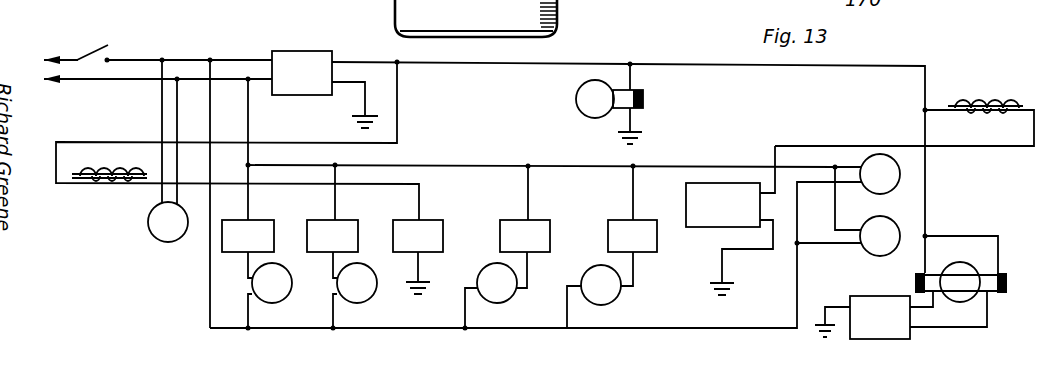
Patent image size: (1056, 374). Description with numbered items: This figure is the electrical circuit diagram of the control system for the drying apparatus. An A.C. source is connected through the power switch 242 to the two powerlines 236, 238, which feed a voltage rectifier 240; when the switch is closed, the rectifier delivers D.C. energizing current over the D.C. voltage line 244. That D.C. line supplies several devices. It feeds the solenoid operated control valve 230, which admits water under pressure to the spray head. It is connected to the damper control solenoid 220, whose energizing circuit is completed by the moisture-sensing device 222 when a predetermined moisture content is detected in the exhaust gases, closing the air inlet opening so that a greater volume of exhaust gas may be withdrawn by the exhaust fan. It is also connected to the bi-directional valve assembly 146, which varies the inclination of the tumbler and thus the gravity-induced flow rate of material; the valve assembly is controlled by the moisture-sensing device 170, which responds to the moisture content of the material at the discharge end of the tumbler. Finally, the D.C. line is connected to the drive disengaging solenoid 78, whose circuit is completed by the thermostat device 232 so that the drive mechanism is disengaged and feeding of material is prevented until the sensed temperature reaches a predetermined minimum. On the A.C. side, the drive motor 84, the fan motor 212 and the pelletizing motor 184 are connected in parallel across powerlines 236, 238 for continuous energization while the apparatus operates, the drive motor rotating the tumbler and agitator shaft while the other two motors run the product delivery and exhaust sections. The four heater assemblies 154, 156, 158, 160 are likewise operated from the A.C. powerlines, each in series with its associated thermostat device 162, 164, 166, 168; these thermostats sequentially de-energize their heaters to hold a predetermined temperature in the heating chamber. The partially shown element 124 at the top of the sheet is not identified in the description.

The power switch 242 is at (94, 52).
The A.C. powerline 236 is at (143, 59).
The A.C. powerline 238 is at (138, 81).
The voltage rectifier 240 is at (293, 58).
The D.C. voltage line 244 is at (690, 64).
The solenoid operated control valve 230 is at (644, 97).
The damper control solenoid 220 is at (966, 100).
The drive disengaging solenoid 78 is at (108, 172).
The drive motor 84 is at (148, 226).
The thermostat device 162 is at (258, 233).
The thermostat device 164 is at (343, 233).
The thermostat device 232 is at (428, 235).
The thermostat device 166 is at (538, 233).
The thermostat device 168 is at (645, 236).
The heater assembly 154 is at (263, 288).
The heater assembly 156 is at (349, 288).
The heater assembly 158 is at (489, 288).
The heater assembly 160 is at (599, 290).
The moisture-sensing device 222 is at (718, 228).
The pelletizing motor 184 is at (871, 176).
The fan motor 212 is at (869, 244).
The bi-directional valve assembly 146 is at (992, 302).
The moisture-sensing device 170 is at (895, 335).
The tank 124 is at (528, 18).